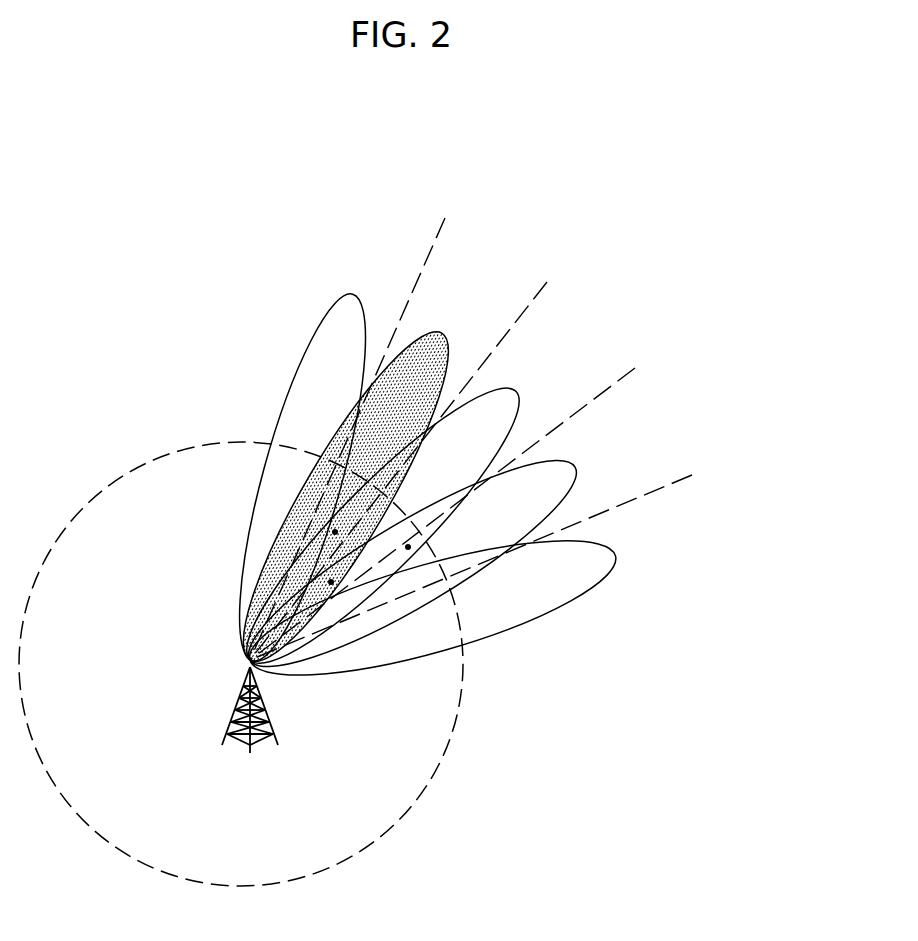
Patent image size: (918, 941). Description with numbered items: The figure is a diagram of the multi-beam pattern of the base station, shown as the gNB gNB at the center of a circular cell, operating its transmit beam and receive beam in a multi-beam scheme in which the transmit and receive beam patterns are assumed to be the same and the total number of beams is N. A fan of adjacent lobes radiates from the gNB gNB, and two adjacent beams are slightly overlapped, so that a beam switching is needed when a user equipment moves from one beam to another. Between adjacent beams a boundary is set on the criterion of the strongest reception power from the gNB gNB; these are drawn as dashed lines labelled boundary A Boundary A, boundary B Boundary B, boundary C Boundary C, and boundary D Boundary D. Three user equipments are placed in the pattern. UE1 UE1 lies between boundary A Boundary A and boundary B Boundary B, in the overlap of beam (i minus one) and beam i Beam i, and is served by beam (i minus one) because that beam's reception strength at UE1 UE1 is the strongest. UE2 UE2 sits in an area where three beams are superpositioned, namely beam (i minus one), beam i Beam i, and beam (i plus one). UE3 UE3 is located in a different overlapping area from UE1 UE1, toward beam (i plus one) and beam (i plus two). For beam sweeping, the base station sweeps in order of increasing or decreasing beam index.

The beam i Beam i is at (393, 524).
The boundary A Boundary A is at (367, 424).
The boundary B Boundary B is at (439, 456).
The boundary C Boundary C is at (489, 501).
The boundary D Boundary D is at (513, 554).
The element UE1 is at (329, 526).
The element UE2 is at (333, 591).
The element UE3 is at (417, 555).
The element gNB is at (250, 728).